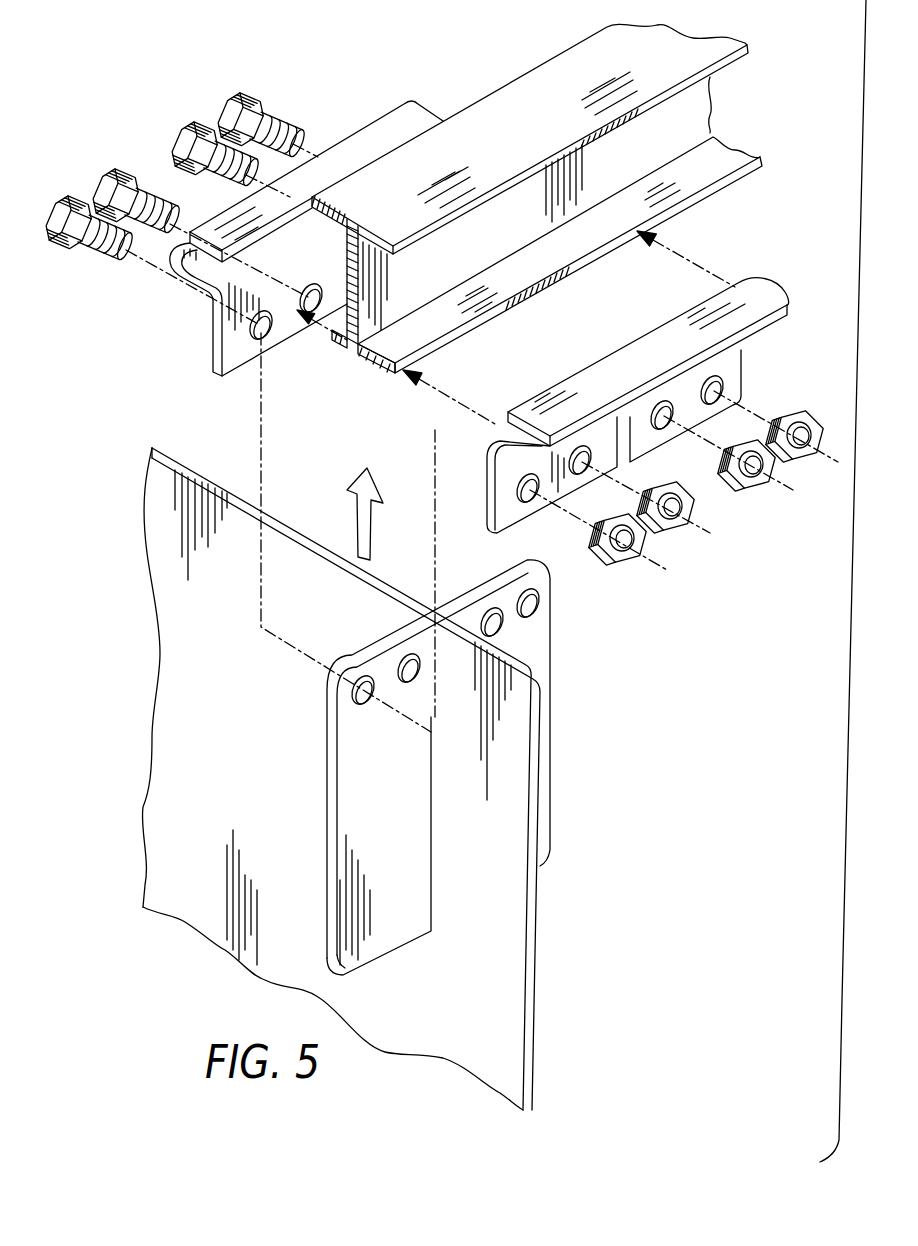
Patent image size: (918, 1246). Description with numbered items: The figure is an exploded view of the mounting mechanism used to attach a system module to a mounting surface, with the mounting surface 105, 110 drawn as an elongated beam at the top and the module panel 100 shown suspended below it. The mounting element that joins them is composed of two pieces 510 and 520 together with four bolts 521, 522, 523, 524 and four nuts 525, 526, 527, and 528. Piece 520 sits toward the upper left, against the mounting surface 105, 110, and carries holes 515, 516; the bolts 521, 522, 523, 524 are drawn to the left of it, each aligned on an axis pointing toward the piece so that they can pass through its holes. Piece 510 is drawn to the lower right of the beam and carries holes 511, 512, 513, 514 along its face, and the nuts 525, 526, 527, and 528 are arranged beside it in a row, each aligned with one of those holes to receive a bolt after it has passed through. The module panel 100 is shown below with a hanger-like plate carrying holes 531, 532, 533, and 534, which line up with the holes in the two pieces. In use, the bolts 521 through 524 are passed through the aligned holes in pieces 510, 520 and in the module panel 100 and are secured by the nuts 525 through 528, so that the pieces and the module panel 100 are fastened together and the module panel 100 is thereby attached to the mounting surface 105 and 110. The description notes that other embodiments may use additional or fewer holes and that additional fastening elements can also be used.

The module panel 100 is at (180, 727).
The mounting surface 105 is at (537, 198).
The mounting surface 110 is at (558, 100).
The mounting element piece 510 is at (753, 303).
The hole 511 is at (532, 495).
The hole 512 is at (574, 470).
The hole 513 is at (654, 428).
The hole 514 is at (727, 384).
The hole 515 is at (265, 333).
The hole 516 is at (317, 313).
The mounting element piece 520 is at (358, 137).
The bolt 521 is at (55, 200).
The bolt 522 is at (108, 172).
The bolt 523 is at (180, 125).
The bolt 524 is at (222, 100).
The nut 525 is at (618, 565).
The nut 526 is at (673, 533).
The nut 527 is at (750, 488).
The nut 528 is at (808, 414).
The hole 531 is at (353, 708).
The hole 532 is at (412, 655).
The hole 533 is at (498, 626).
The hole 534 is at (540, 600).